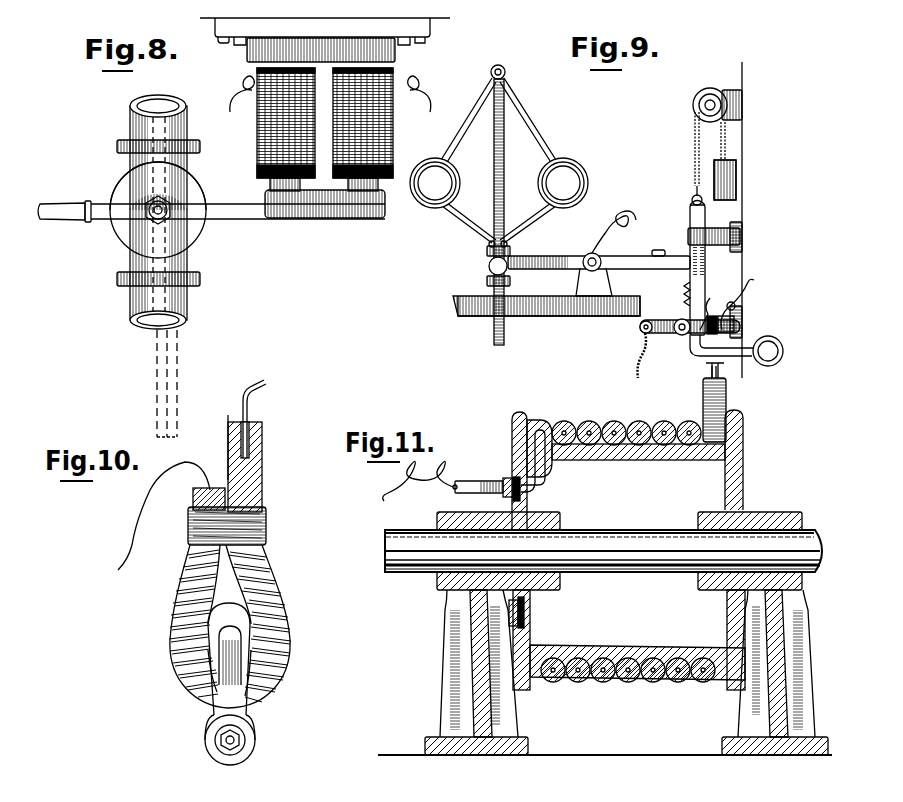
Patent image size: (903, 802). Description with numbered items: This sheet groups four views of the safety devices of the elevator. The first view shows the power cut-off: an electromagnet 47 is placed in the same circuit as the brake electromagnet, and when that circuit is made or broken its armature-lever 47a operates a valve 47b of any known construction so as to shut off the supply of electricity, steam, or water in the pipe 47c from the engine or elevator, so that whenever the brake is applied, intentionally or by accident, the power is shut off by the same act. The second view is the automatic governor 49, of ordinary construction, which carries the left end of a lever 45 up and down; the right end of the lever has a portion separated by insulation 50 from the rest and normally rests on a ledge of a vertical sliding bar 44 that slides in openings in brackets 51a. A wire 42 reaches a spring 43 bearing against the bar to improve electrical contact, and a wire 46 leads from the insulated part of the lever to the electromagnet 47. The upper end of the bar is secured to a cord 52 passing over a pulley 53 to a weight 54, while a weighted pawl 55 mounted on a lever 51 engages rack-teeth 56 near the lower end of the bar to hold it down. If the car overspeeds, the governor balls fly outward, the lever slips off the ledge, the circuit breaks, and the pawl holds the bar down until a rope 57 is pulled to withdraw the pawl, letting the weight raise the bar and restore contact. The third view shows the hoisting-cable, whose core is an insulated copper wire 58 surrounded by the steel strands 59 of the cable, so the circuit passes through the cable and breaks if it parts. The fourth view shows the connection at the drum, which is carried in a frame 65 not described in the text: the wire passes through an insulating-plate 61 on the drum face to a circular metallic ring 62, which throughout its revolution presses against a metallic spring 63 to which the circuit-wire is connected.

In FIG. 9, the wire 42 is at (748, 286).
In FIG. 9, the spring 43 is at (712, 318).
In FIG. 9, the vertical sliding bar 44 is at (705, 268).
In FIG. 9, the lever 45 is at (620, 256).
In FIG. 9, the wire 46 is at (613, 230).
In FIG. 8, the electromagnet 47 is at (394, 132).
In FIG. 8, the armature-lever 47a is at (244, 220).
In FIG. 8, the valve 47b is at (126, 182).
In FIG. 8, the pipe 47c is at (130, 124).
In FIG. 9, the governor 49 is at (580, 172).
In FIG. 9, the insulation 50 is at (658, 270).
In FIG. 9, the lever 51 is at (665, 333).
In FIG. 9, the brackets 51a is at (705, 230).
In FIG. 9, the cord 52 is at (695, 145).
In FIG. 9, the pulley 53 is at (712, 88).
In FIG. 9, the weight 54 is at (737, 182).
In FIG. 9, the weighted pawl 55 is at (682, 319).
In FIG. 9, the rack-teeth 56 is at (680, 293).
In FIG. 9, the rope 57 is at (642, 348).
In FIG. 10, the insulated copper wire 58 is at (178, 463).
In FIG. 11, the insulated copper wire 58 is at (672, 420).
In FIG. 10, the steel strands 59 is at (262, 440).
In FIG. 11, the steel strands 59 is at (618, 420).
In FIG. 11, the insulating-plate 61 is at (508, 478).
In FIG. 11, the circular metallic ring 62 is at (516, 477).
In FIG. 11, the metallic spring 63 is at (480, 481).
In FIG. 11, the frame 65 is at (745, 470).